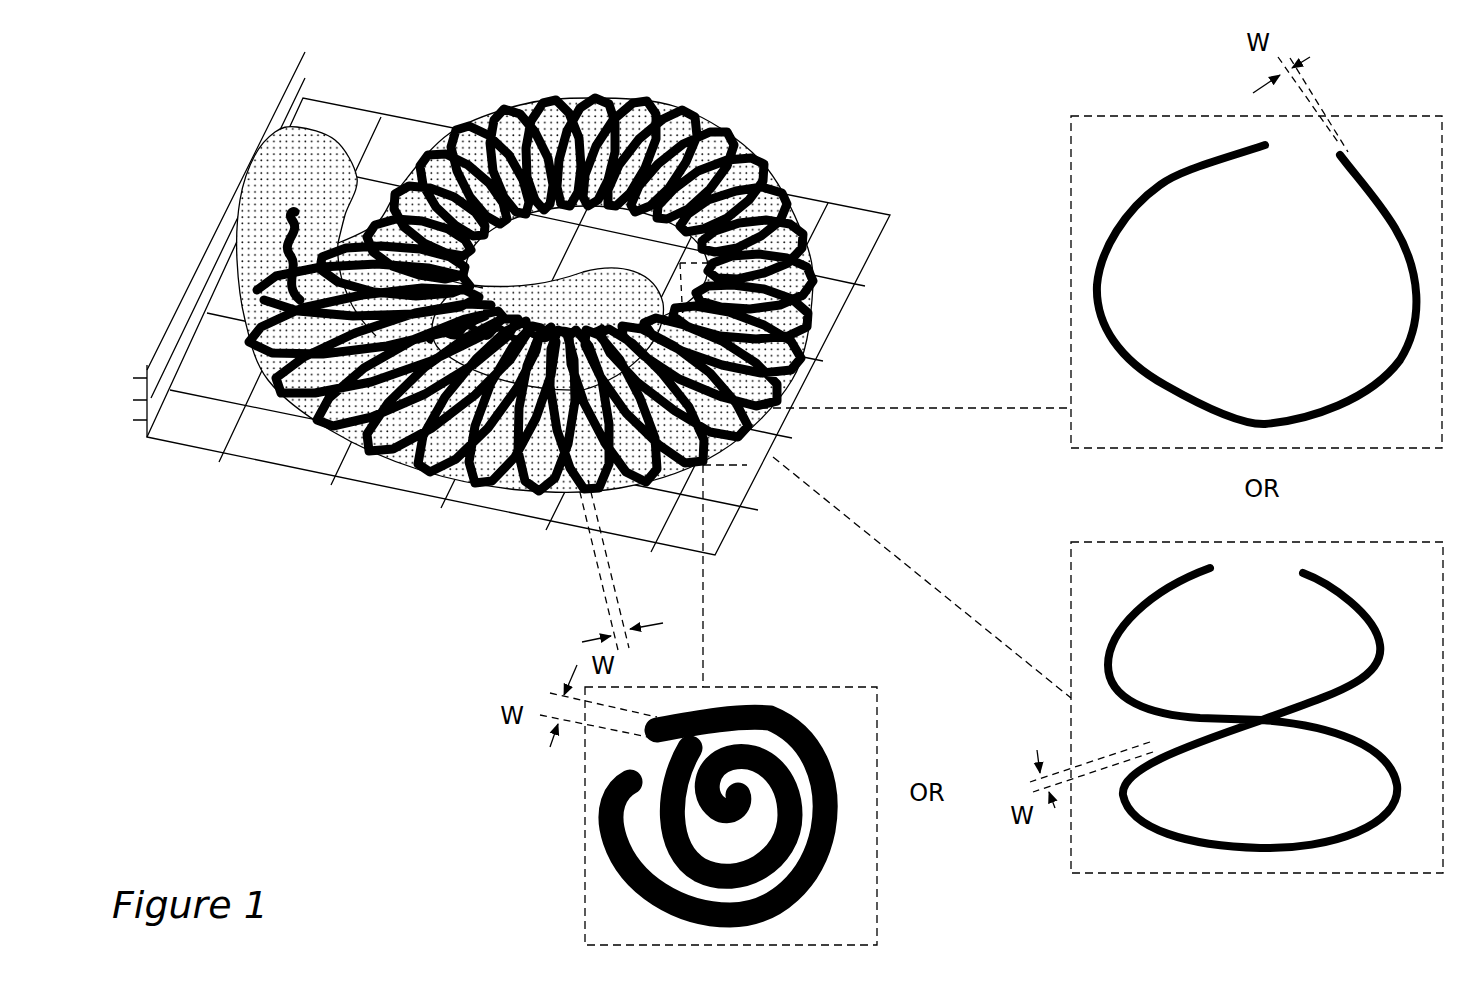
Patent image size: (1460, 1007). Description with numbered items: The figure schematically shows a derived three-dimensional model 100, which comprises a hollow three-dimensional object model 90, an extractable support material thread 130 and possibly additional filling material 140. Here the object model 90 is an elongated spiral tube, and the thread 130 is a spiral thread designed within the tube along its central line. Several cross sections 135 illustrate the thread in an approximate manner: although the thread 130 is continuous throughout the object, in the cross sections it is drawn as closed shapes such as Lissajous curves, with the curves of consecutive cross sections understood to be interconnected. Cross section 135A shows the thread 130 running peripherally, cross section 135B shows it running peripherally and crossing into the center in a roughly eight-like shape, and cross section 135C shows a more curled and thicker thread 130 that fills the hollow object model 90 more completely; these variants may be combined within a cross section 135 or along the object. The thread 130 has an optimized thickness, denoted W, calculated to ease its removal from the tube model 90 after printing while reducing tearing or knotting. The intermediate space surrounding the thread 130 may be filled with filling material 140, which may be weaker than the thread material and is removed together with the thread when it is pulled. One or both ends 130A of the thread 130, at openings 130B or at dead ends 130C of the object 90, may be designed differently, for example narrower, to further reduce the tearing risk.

The derived 3D model 100 is at (170, 95).
The hollow 3D object model 90 is at (285, 157).
The extractable support material thread 130 is at (498, 492).
The thread ends 130A is at (202, 203).
The object openings 130B is at (334, 115).
The object dead ends 130C is at (654, 276).
The cross section 135 is at (733, 467).
The peripheral cross section 135A is at (1125, 116).
The eight-shaped cross section 135B is at (1127, 542).
The curled thick cross section 135C is at (585, 815).
The filling material 140 is at (1230, 218).